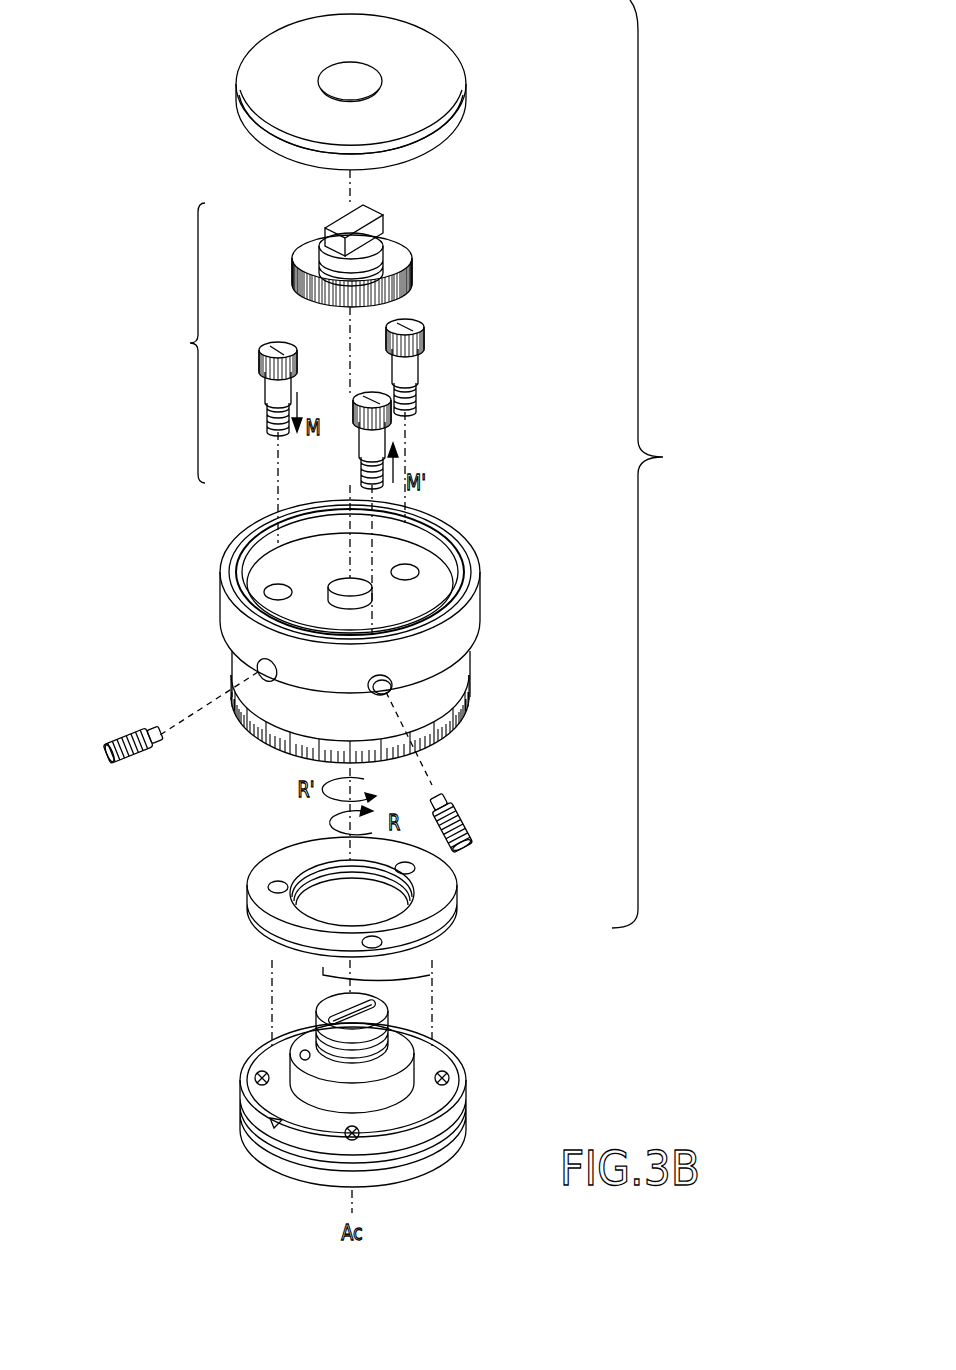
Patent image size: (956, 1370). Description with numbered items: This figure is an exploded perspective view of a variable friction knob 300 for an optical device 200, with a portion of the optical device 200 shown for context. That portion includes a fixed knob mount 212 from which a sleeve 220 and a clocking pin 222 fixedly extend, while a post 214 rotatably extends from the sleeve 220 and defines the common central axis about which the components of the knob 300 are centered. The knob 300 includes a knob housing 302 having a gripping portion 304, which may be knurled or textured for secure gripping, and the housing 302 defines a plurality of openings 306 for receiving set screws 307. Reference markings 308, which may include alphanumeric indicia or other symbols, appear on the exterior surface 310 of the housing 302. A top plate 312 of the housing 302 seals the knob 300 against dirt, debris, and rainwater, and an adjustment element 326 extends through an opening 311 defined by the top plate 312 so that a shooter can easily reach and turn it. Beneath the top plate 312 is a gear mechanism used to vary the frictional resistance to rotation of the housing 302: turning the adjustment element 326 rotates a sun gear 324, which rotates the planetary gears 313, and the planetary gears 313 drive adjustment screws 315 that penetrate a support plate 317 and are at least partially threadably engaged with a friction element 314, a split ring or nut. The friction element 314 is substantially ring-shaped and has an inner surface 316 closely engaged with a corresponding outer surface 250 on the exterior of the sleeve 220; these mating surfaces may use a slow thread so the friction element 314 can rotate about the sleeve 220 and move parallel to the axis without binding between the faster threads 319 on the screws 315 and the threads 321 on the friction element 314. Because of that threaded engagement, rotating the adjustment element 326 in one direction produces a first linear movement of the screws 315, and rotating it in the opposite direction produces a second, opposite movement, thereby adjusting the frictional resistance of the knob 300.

The optical device 200 is at (513, 1090).
The fixed knob mount 212 is at (465, 1069).
The post 214 is at (380, 1009).
The sleeve 220 is at (305, 1088).
The clocking pin 222 is at (301, 1055).
The outer surface 250 is at (408, 1046).
The variable friction knob 300 is at (663, 457).
The knob housing 302 is at (455, 522).
The gripping portion 304 is at (221, 618).
The openings 306 is at (248, 669).
The set screws 307 is at (106, 745).
The reference markings 308 is at (262, 741).
The exterior surface 310 is at (470, 666).
The opening 311 is at (360, 70).
The top plate 312 is at (439, 70).
The planetary gears 313 is at (283, 343).
The friction element 314 is at (444, 890).
The adjustment screws 315 is at (267, 387).
The inner surface 316 is at (312, 890).
The support plate 317 is at (437, 588).
The threads 319 is at (268, 425).
The threads 321 is at (416, 846).
The sun gear 324 is at (398, 248).
The adjustment element 326 is at (325, 226).